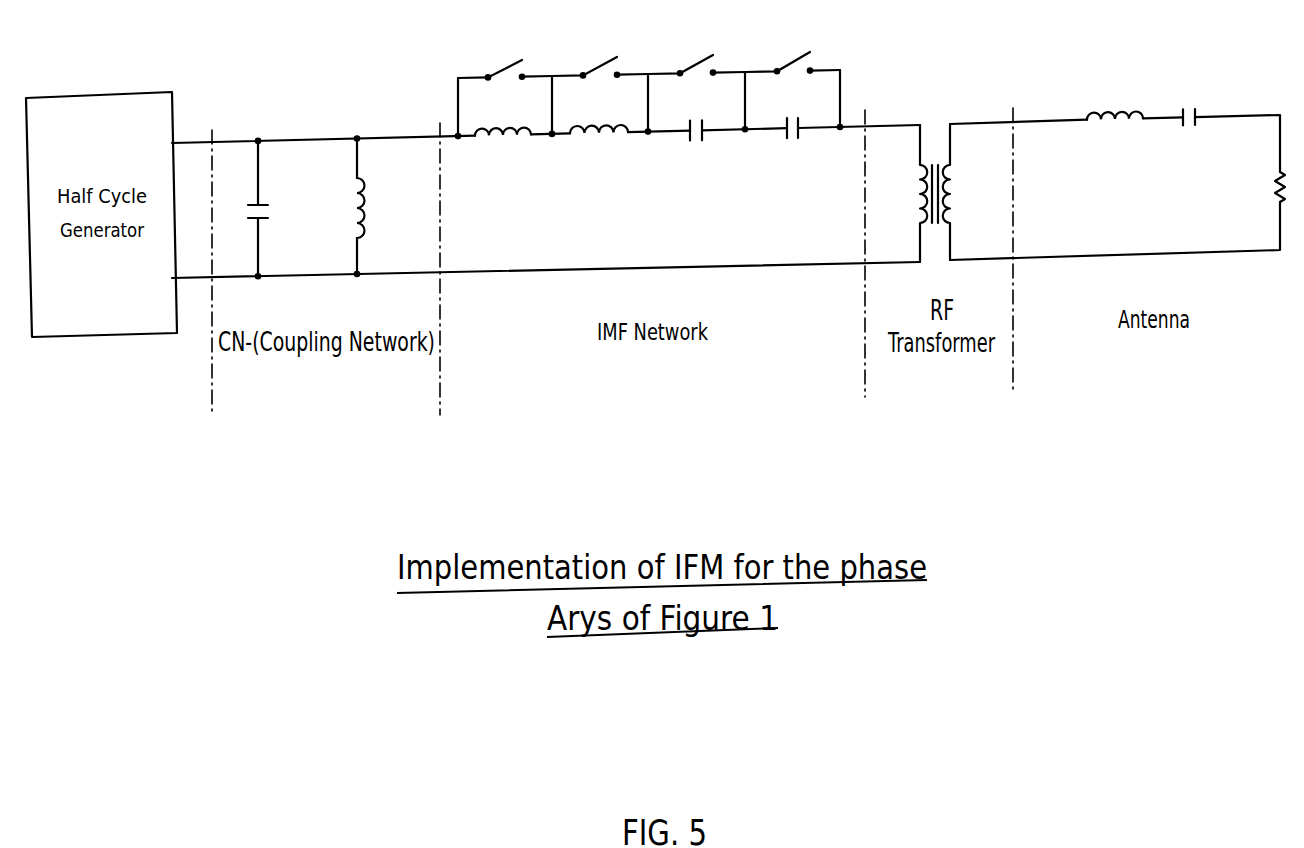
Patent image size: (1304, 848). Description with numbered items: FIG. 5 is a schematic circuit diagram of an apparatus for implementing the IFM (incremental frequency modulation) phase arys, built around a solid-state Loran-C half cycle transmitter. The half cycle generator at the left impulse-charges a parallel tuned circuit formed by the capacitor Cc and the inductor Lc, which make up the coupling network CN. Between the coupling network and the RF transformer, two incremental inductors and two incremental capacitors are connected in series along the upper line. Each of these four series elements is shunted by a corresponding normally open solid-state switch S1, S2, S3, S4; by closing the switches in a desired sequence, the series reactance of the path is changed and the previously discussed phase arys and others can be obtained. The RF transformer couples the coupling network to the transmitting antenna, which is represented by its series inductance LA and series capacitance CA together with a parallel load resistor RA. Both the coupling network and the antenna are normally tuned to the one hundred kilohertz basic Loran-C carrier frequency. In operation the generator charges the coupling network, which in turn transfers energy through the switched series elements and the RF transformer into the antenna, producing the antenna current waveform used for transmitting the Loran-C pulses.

The coupling network capacitor Cc is at (274, 209).
The coupling network inductor Lc is at (376, 206).
The switch S1 is at (505, 53).
The switch S2 is at (600, 51).
The switch S3 is at (696, 49).
The switch S4 is at (792, 47).
The antenna series inductance LA is at (1115, 137).
The antenna capacitance CA is at (1197, 137).
The antenna load resistor RA is at (1258, 188).